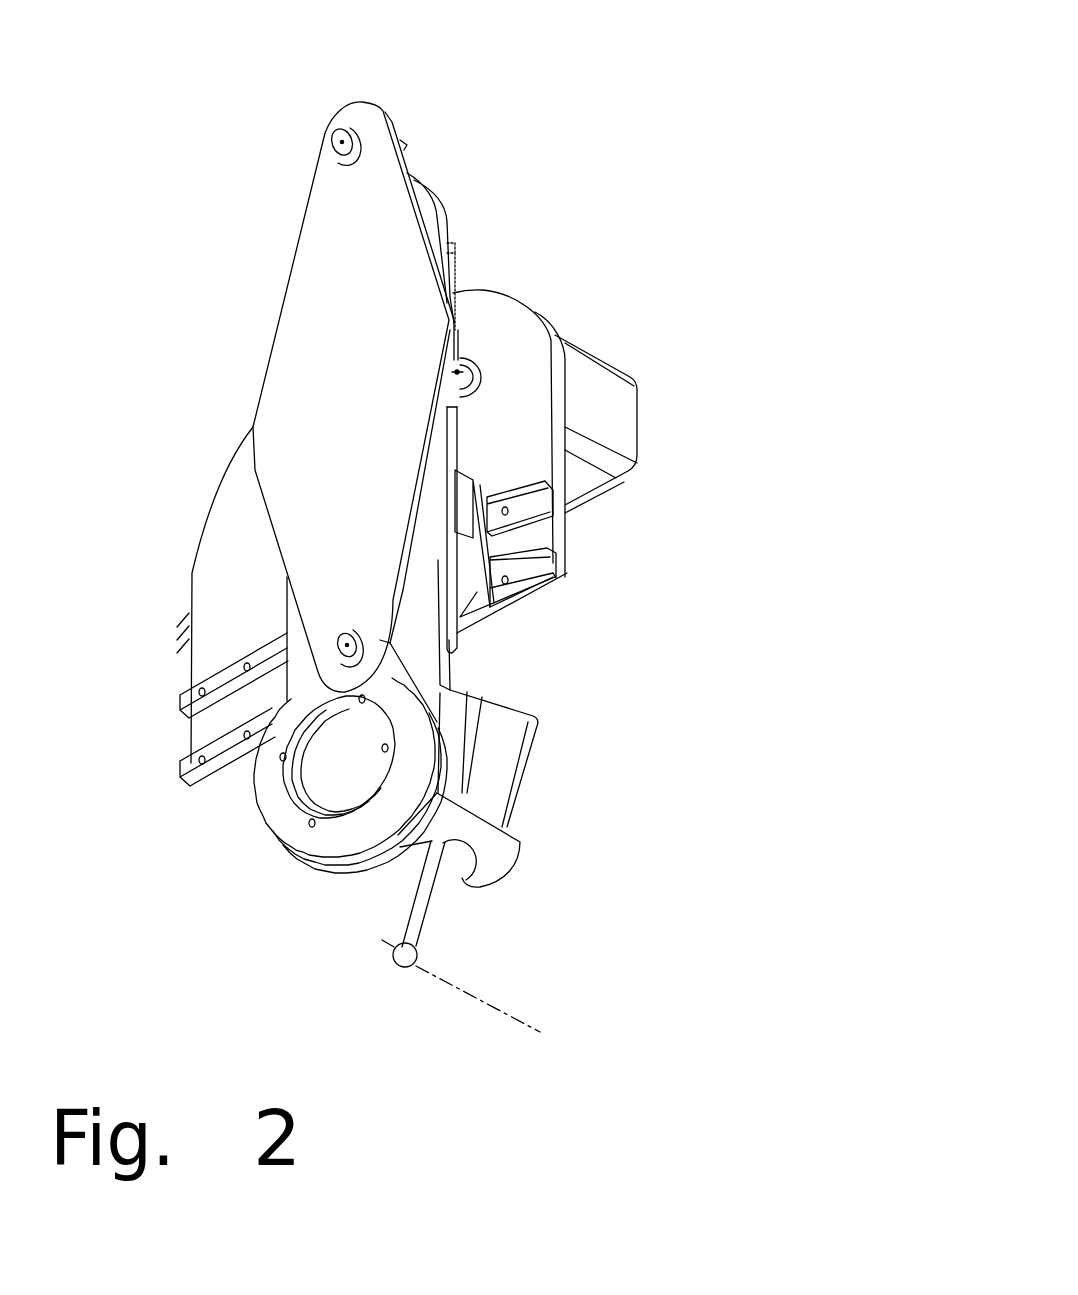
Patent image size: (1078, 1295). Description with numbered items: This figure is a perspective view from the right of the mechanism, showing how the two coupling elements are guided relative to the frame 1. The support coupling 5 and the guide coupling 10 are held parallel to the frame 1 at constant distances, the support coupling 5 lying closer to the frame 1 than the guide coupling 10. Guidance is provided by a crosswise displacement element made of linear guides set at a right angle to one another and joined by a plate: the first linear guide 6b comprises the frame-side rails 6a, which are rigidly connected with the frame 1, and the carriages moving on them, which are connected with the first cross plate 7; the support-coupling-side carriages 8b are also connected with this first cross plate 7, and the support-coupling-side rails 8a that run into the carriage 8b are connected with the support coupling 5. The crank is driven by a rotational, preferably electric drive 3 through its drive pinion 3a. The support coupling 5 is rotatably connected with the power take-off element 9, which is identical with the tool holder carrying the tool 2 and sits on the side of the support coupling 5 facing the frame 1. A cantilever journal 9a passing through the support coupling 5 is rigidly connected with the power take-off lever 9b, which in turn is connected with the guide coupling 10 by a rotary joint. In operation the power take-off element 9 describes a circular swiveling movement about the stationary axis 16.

The frame 1 is at (233, 527).
The tool 2 is at (515, 722).
The drive 3 is at (605, 370).
The drive pinion 3a is at (473, 373).
The support coupling 5 is at (417, 621).
The rail on the frame side 6a is at (180, 761).
The first linear guide 6b is at (487, 617).
The first cross plate 7 is at (552, 588).
The rail on the support coupling side 8a is at (452, 454).
The carriage on the support coupling side 8b is at (465, 487).
The power take-off element 9 is at (500, 856).
The cantilever journal 9a is at (350, 654).
The power take-off lever 9b is at (278, 808).
The guide coupling 10 is at (364, 252).
The stationary axis 16 is at (412, 977).